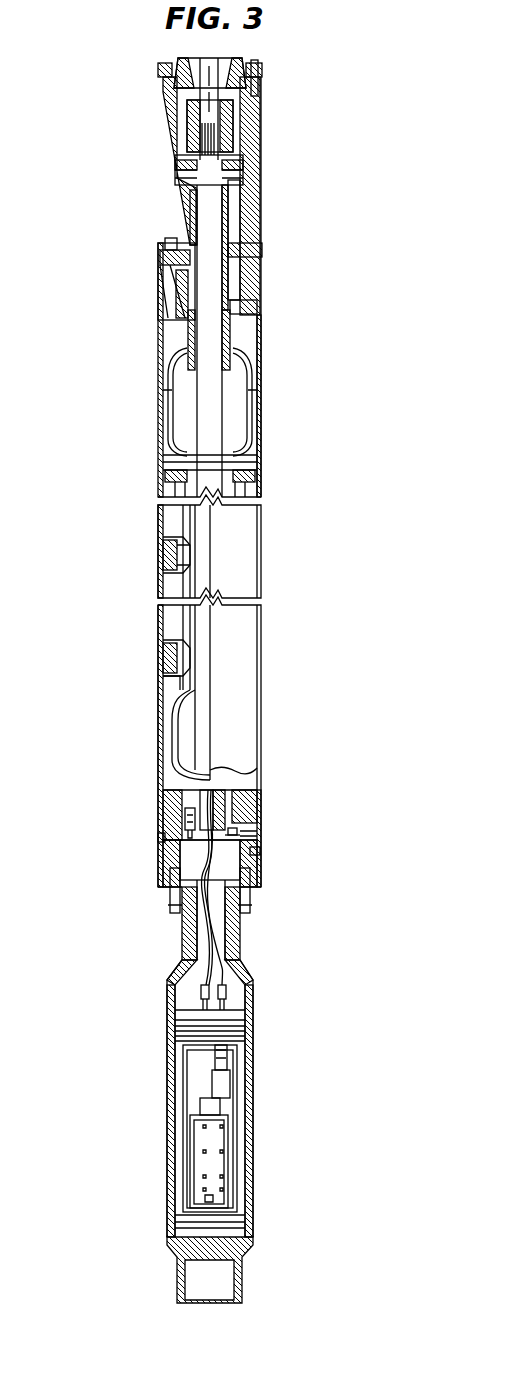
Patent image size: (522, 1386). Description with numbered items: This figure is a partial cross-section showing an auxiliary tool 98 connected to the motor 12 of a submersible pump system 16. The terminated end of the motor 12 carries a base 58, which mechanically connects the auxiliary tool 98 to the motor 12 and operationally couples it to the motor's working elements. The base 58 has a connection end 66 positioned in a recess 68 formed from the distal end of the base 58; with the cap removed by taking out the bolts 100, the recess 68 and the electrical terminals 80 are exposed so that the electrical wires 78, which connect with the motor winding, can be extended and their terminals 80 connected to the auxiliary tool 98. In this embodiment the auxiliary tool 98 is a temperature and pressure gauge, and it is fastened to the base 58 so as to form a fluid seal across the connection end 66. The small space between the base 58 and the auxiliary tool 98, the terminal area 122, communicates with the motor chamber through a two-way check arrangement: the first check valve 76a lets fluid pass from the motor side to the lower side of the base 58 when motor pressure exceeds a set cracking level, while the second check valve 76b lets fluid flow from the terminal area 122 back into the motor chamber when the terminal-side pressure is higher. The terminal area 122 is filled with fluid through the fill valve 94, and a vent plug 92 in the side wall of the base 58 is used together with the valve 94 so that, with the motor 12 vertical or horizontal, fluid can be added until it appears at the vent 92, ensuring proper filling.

The motor 12 is at (288, 605).
The submersible pump system 16 is at (288, 262).
The base 58 is at (160, 875).
The connection end 66 is at (257, 832).
The recess 68 is at (192, 862).
The first check valve 76a is at (188, 811).
The second check valve 76b is at (227, 832).
The electrical wires 78 is at (217, 940).
The terminals 80 is at (223, 990).
The vent plug 92 is at (160, 838).
The fluid valve 94 is at (258, 852).
The auxiliary tool 98 is at (167, 980).
The bolts 100 is at (253, 910).
The terminal area 122 is at (207, 888).